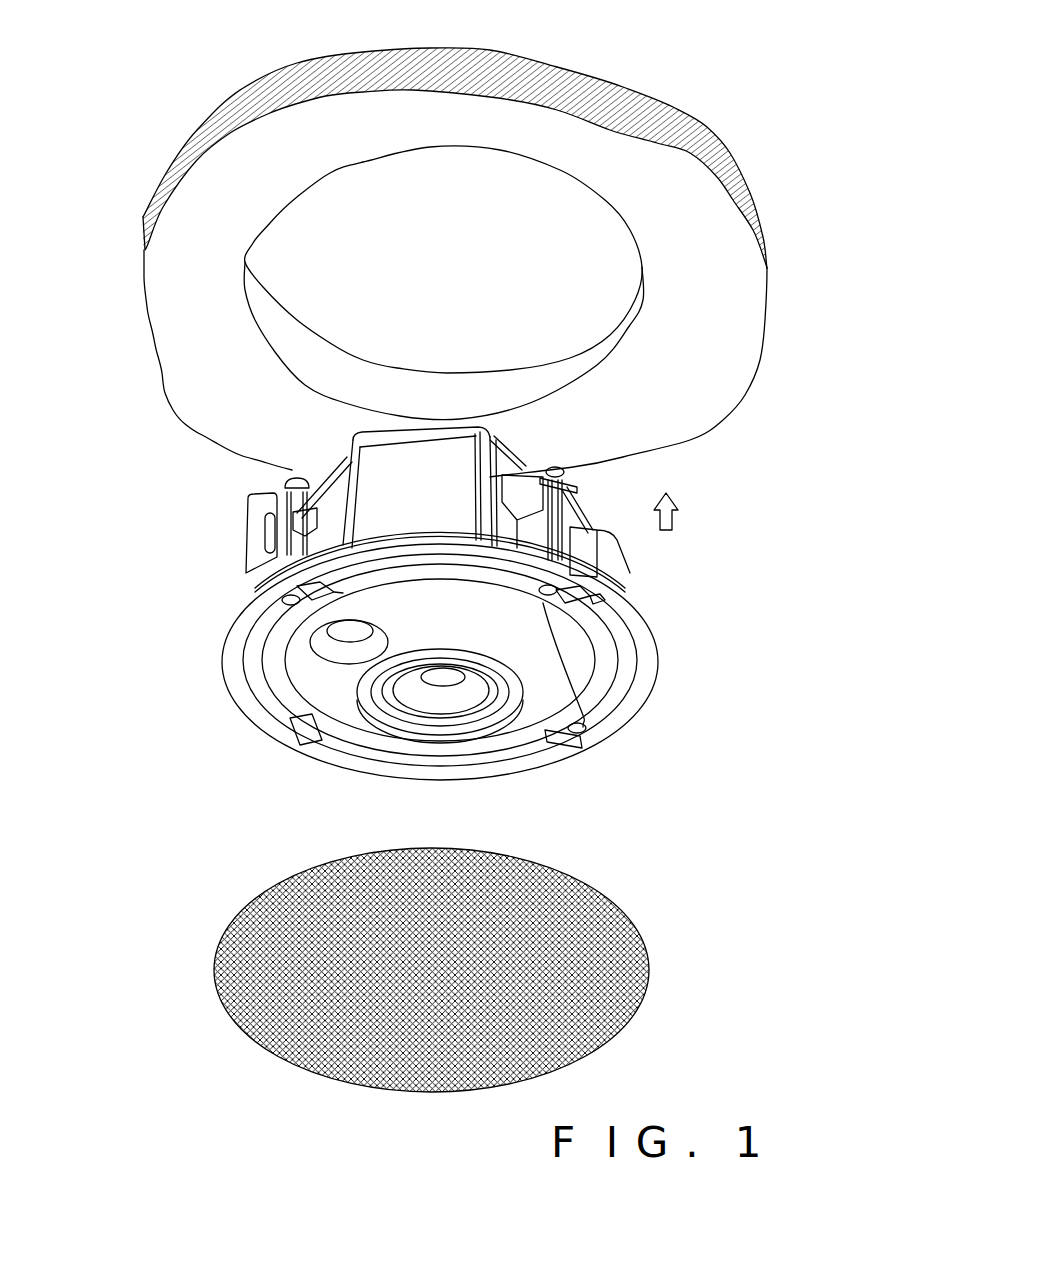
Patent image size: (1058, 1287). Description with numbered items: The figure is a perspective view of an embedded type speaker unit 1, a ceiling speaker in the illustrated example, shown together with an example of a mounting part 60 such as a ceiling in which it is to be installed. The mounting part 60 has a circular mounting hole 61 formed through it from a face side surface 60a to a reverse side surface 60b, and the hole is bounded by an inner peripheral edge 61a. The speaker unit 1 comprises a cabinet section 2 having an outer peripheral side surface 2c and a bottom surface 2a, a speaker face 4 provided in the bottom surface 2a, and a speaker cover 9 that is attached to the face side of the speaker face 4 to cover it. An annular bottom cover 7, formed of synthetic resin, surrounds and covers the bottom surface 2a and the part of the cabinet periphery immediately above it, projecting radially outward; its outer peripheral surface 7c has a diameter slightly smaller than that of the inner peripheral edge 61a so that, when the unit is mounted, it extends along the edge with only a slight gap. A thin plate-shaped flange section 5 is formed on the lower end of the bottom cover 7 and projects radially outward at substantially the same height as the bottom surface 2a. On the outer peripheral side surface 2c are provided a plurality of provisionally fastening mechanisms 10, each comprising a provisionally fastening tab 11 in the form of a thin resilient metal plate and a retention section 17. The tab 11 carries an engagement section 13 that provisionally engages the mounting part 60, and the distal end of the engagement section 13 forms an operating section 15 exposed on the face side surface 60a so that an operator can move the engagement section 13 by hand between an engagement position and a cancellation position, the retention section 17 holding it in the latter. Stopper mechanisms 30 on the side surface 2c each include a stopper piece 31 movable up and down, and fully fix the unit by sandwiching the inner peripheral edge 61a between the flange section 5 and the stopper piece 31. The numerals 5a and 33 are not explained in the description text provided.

The speaker unit 1 is at (172, 690).
The cabinet section 2 is at (240, 542).
The bottom surface 2a is at (238, 637).
The outer peripheral side surface 2c is at (347, 442).
The speaker face 4 is at (368, 752).
The flange section 5 is at (428, 692).
The mounting bracket 5a is at (577, 607).
The bottom cover 7 is at (428, 533).
The outer peripheral surface 7c is at (268, 592).
The speaker cover 9 is at (633, 1020).
The provisionally fastening mechanism 10 is at (602, 520).
The provisionally fastening tab 11 is at (580, 509).
The engagement section 13 is at (573, 597).
The operating section 15 is at (593, 593).
The retention section 17 is at (600, 612).
The stopper mechanism 30 is at (578, 468).
The stopper piece 31 is at (522, 470).
The screw head 33 is at (545, 607).
The mounting part 60 is at (733, 300).
The face side surface 60a is at (678, 197).
The reverse side surface 60b is at (640, 107).
The mounting hole 61 is at (627, 320).
The inner peripheral edge 61a is at (575, 312).